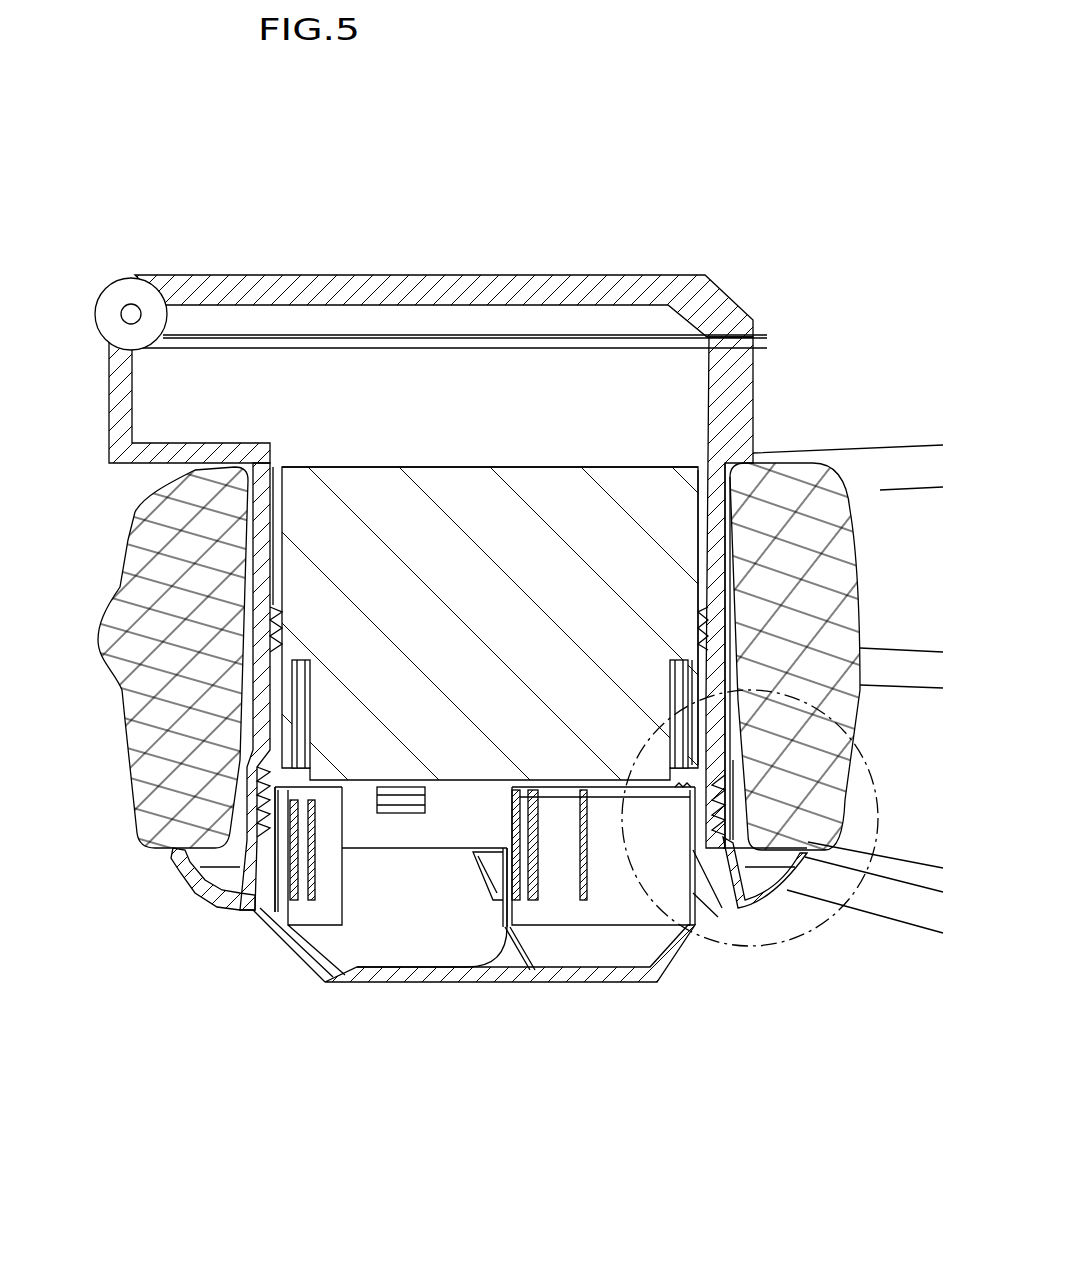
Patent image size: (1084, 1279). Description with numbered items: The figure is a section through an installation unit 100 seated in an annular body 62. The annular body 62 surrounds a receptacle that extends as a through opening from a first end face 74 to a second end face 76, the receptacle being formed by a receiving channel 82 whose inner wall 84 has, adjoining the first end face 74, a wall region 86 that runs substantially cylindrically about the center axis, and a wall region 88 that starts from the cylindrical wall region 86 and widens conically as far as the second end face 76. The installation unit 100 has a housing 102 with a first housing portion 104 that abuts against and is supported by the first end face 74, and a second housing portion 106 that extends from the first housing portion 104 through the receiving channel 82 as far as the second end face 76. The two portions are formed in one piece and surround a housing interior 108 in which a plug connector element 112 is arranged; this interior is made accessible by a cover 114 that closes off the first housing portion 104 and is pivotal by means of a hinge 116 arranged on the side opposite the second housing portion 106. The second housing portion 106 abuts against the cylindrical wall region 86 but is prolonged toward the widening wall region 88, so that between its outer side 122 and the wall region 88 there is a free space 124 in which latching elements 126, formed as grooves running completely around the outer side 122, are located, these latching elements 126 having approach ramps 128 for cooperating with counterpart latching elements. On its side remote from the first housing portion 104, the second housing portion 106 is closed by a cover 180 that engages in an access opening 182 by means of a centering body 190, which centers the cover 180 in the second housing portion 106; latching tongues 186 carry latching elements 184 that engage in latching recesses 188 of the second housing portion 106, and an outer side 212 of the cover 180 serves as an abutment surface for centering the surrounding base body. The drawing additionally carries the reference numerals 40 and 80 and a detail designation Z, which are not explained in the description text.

The installation unit 100 is at (762, 287).
The housing 102 is at (757, 433).
The first housing portion 104 is at (743, 372).
The second housing portion 106 is at (717, 600).
The housing interior 108 is at (547, 461).
The plug connector element 112 is at (505, 600).
The cover 114 is at (468, 290).
The hinge 116 is at (130, 302).
The outer side 122 is at (740, 733).
The free space 124 is at (247, 788).
The latching elements 126 is at (733, 817).
The approach ramps 128 is at (737, 793).
The seal 40 is at (188, 699).
The annular body 62 is at (167, 631).
The first end face 74 is at (185, 453).
The second end face 76 is at (193, 890).
The left spring 80 is at (292, 636).
The receiving channel 82 is at (260, 572).
The inner wall 84 is at (255, 528).
The cylindrical wall region 86 is at (733, 538).
The conically widening wall region 88 is at (745, 690).
The cover 180 is at (622, 990).
The access opening 182 is at (258, 832).
The latching elements 184 is at (563, 793).
The latching tongues 186 is at (548, 843).
The latching recesses 188 is at (397, 800).
The centering body 190 is at (284, 826).
The outer side 212 is at (731, 897).
The detail region Z is at (710, 940).